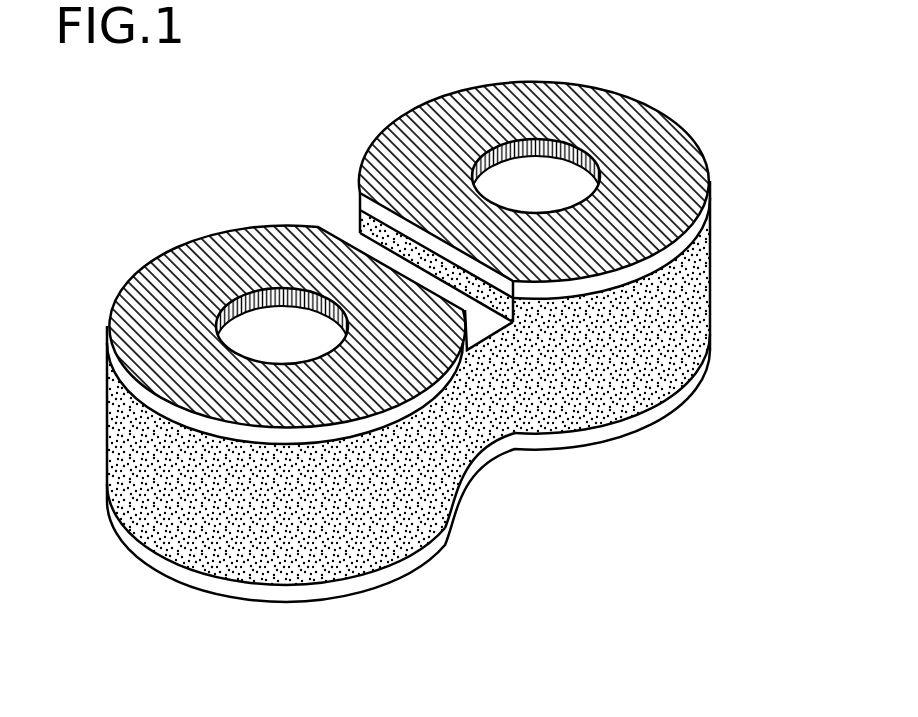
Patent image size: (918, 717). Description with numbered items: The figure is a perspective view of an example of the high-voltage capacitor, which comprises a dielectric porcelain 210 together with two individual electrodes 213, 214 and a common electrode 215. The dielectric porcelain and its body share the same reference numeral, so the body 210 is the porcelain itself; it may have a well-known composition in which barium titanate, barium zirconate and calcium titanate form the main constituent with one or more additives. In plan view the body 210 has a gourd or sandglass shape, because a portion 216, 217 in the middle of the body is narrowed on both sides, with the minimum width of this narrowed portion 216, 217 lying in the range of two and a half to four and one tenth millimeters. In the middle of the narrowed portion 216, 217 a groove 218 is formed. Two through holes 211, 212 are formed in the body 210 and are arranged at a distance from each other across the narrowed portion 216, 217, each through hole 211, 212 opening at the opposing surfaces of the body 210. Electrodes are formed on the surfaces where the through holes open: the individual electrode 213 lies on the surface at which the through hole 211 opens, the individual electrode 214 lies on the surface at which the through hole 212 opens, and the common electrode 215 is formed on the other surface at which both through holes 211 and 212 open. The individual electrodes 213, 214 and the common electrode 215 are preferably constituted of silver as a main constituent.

The dielectric porcelain body 210 is at (608, 322).
The through hole 211 is at (282, 318).
The through hole 212 is at (540, 177).
The individual electrode 213 is at (197, 372).
The individual electrode 214 is at (657, 175).
The common electrode 215 is at (330, 601).
The narrowed portion 216 is at (320, 202).
The narrowed portion 217 is at (481, 407).
The groove 218 is at (486, 326).